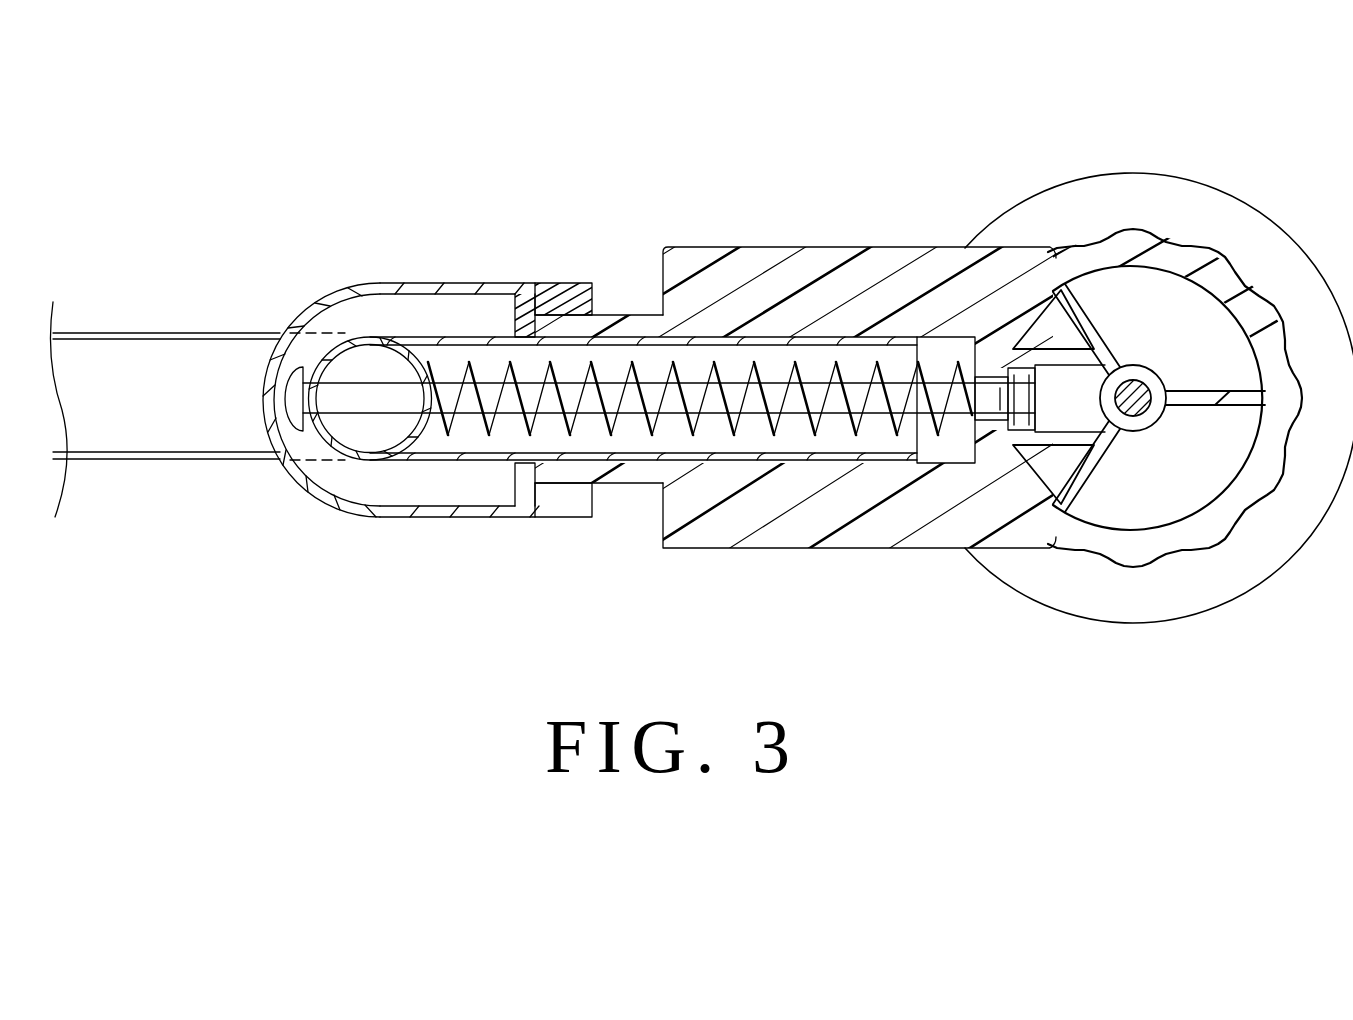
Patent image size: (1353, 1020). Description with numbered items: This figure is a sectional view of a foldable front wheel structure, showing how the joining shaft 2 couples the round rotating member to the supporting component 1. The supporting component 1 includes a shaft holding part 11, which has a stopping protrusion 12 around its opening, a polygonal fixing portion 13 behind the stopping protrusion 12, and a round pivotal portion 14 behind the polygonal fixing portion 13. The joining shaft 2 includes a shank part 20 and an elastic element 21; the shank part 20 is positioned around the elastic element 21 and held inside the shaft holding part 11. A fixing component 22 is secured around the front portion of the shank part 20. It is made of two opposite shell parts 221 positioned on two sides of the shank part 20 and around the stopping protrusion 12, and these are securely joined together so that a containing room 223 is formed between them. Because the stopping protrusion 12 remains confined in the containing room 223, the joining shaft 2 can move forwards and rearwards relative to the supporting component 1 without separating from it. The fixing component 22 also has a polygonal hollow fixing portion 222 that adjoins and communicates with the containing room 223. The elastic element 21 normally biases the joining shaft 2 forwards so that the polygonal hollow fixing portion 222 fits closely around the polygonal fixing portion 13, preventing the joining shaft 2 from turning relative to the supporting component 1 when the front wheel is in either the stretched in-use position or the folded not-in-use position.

The supporting component 1 is at (1047, 205).
The joining shaft 2 is at (198, 465).
The shaft holding part 11 is at (752, 267).
The stopping protrusion 12 is at (527, 497).
The polygonal fixing portion 13 is at (570, 473).
The round pivotal portion 14 is at (636, 320).
The shank part 20 is at (875, 455).
The elastic element 21 is at (812, 420).
The fixing component 22 is at (297, 315).
The shell parts 221 is at (387, 282).
The polygonal hollow fixing portion 222 is at (522, 310).
The containing room 223 is at (374, 478).